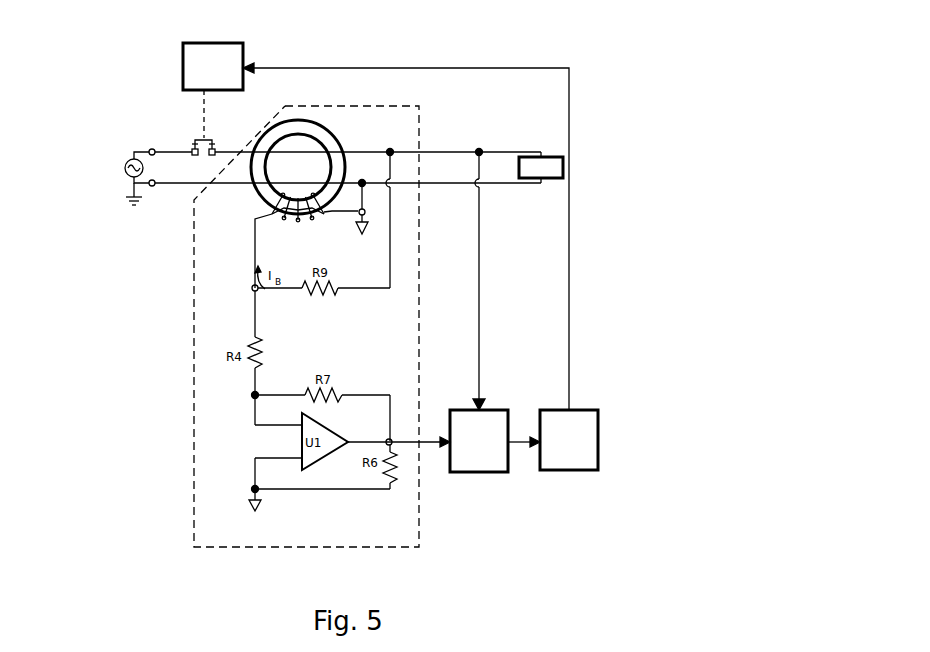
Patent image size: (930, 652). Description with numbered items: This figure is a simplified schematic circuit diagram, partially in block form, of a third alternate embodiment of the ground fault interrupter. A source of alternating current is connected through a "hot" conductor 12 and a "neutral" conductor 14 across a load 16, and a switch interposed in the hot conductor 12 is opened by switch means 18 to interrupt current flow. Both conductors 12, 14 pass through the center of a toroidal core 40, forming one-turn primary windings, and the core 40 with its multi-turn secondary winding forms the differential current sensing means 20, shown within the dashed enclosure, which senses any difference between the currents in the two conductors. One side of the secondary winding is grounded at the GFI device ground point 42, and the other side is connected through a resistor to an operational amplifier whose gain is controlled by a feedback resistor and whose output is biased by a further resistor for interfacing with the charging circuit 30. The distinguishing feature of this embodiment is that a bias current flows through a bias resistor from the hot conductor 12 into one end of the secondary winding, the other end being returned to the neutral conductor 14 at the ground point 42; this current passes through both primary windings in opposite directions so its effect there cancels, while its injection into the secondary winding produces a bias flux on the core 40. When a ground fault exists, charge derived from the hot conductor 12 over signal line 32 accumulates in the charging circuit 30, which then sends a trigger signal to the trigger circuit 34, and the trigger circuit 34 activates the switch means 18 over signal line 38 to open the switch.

The hot conductor 12 is at (224, 151).
The neutral conductor 14 is at (170, 185).
The load 16 is at (545, 181).
The switch means 18 is at (232, 43).
The differential current sensing means 20 is at (193, 463).
The charging circuit 30 is at (480, 473).
The signal line 32 is at (479, 352).
The trigger circuit 34 is at (590, 470).
The signal line 38 is at (570, 290).
The toroidal core 40 is at (262, 190).
The ground point 42 is at (358, 214).